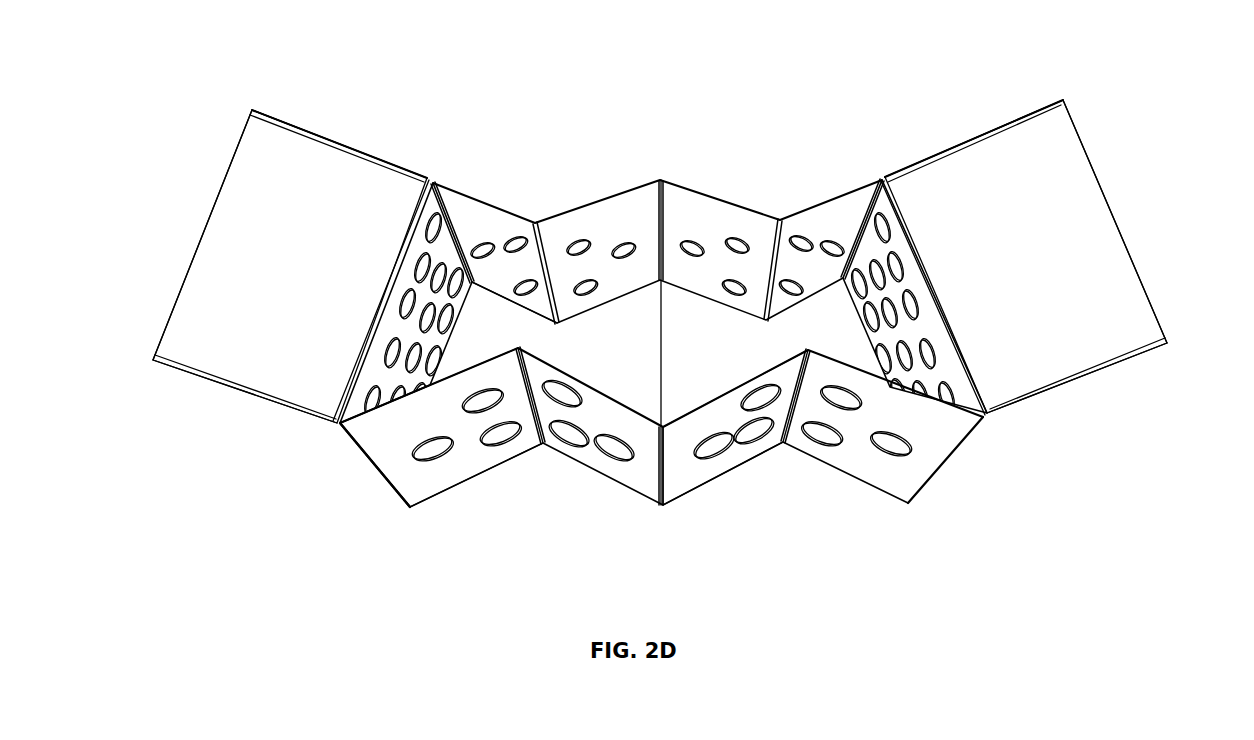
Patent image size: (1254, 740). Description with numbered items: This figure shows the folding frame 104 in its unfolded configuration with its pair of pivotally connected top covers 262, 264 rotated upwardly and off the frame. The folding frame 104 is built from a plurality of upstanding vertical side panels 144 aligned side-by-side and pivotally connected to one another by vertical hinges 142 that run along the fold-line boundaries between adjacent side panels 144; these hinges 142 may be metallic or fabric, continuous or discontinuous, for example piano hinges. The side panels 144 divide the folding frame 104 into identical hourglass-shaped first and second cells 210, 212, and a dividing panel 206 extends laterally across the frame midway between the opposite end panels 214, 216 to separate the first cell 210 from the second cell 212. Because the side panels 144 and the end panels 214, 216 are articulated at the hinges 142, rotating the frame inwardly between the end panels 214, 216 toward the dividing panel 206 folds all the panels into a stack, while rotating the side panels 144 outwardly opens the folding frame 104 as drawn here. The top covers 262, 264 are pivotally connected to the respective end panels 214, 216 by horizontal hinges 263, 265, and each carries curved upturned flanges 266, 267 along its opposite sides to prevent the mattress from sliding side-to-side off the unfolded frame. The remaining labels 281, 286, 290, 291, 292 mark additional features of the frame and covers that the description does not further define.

The folding frame 104 is at (727, 105).
The vertical hinges 142 is at (555, 227).
The upstanding vertical side panels 144 is at (490, 205).
The dividing panel 206 is at (666, 336).
The first cell 210 is at (453, 368).
The second cell 212 is at (687, 398).
The end panel 214 is at (963, 402).
The end panel 216 is at (325, 423).
The top cover 262 is at (1065, 155).
The horizontal hinge 263 is at (897, 188).
The top cover 264 is at (245, 150).
The horizontal hinge 265 is at (417, 212).
The curved upturned flange 266 is at (998, 125).
The curved upturned flange 267 is at (341, 140).
The apex fold 281 is at (637, 300).
The lower left edge 286 is at (370, 448).
The lower edge of upper panel 290 is at (496, 290).
The left panel outer edge 291 is at (200, 275).
The right panel outer edge 292 is at (1148, 302).